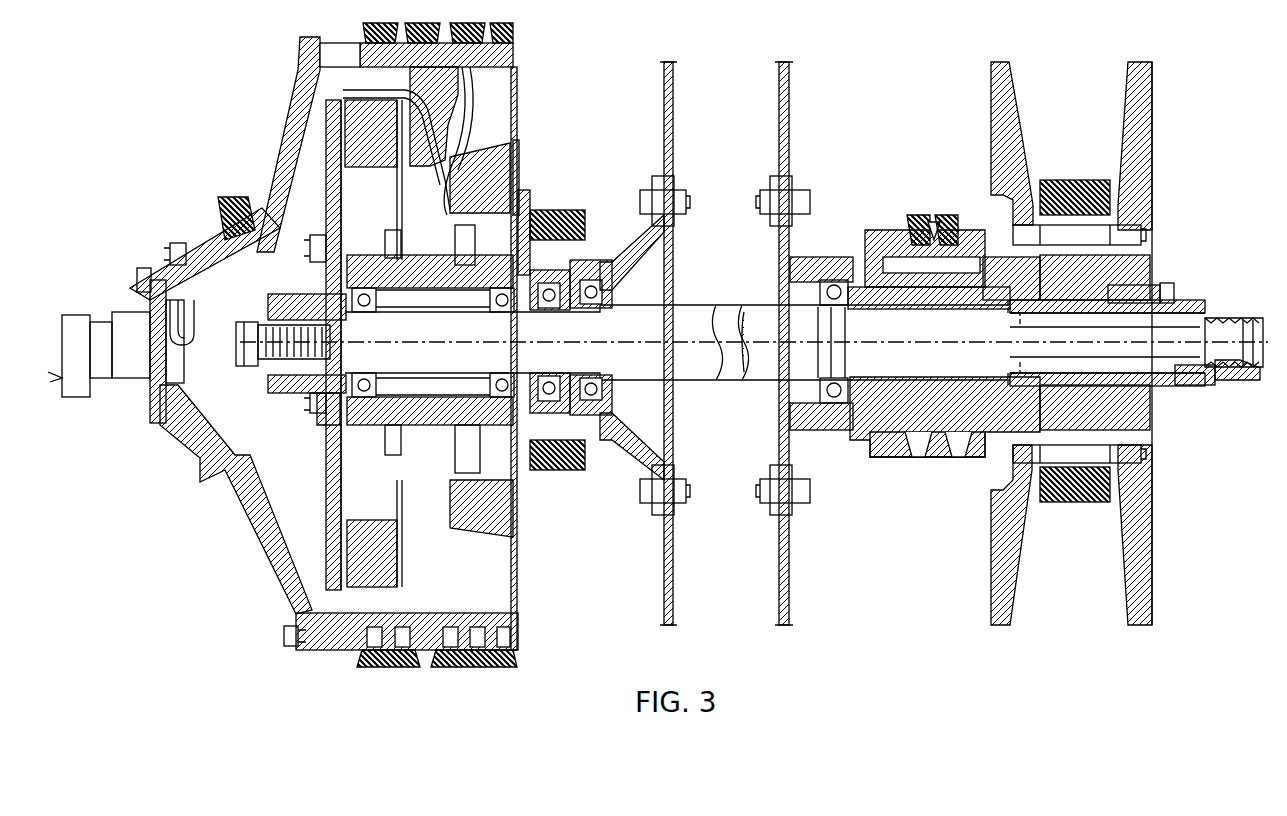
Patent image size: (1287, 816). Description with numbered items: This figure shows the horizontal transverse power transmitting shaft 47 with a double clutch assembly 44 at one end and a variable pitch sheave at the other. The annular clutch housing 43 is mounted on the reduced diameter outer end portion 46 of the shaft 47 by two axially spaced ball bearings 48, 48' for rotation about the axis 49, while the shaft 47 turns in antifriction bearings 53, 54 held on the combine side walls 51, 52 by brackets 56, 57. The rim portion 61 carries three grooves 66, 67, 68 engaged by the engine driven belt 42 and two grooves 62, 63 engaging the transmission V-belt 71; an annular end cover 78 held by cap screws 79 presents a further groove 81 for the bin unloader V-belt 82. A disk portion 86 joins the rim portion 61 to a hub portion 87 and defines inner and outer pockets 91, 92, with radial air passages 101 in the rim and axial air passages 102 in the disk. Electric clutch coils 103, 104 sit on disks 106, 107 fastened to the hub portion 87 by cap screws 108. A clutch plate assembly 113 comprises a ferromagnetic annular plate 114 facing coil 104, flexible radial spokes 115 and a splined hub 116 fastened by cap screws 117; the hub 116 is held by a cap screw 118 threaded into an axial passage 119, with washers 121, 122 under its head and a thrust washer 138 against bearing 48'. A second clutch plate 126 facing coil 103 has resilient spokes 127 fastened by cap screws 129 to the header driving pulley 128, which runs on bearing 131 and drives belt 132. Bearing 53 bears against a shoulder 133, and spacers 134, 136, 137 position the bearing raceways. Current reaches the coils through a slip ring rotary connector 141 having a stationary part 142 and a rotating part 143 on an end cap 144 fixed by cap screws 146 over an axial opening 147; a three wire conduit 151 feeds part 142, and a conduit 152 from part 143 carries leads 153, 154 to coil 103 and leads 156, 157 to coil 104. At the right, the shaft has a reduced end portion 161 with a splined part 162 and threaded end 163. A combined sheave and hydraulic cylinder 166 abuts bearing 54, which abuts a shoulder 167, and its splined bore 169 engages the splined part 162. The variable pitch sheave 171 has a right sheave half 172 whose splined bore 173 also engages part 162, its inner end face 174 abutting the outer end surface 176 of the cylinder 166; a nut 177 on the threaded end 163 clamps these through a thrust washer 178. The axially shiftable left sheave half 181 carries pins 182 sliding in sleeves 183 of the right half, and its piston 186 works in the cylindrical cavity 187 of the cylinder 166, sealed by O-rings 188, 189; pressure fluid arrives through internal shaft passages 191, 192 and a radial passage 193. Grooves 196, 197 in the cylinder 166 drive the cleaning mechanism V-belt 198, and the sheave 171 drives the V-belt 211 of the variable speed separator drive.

The engine driven belt 42 is at (480, 668).
The annular clutch housing 43 is at (272, 545).
The clutch assembly 44 is at (249, 116).
The reduced diameter laterally outer end portion 46 is at (430, 300).
The power transmitting shaft 47 is at (718, 305).
The ball bearing 48 is at (502, 342).
The ball bearing 48' is at (380, 342).
The axis 49 is at (744, 360).
The side wall 51 is at (664, 92).
The side wall 52 is at (790, 80).
The antifriction bearing 53 is at (604, 292).
The antifriction bearing 54 is at (834, 280).
The bracket 56 is at (610, 445).
The bracket 57 is at (830, 440).
The rim portion 61 is at (515, 52).
The V-belt groove 62 is at (372, 618).
The V-belt groove 63 is at (404, 604).
The V-belt groove 66 is at (450, 618).
The V-belt groove 67 is at (480, 618).
The V-belt groove 68 is at (512, 622).
The endless V-belt 71 is at (392, 668).
The annular end cover 78 is at (270, 518).
The cap screws 79 is at (284, 634).
The V-belt groove 81 is at (222, 478).
The endless V-belt 82 is at (232, 198).
The disk portion 86 is at (430, 108).
The hub portion 87 is at (380, 258).
The inner pocket 91 is at (480, 563).
The outer pocket 92 is at (300, 588).
The radial air passages 101 is at (362, 42).
The axial air passages 102 is at (440, 160).
The electric clutch coil 103 is at (500, 145).
The electric clutch coil 104 is at (371, 343).
The disk 106 is at (452, 224).
The disk 107 is at (396, 196).
The cap screws 108 is at (388, 232).
The clutch plate assembly 113 is at (296, 279).
The annular plate 114 is at (326, 164).
The flexible flat radial spokes 115 is at (326, 210).
The hub 116 is at (270, 300).
The cap screws 117 is at (310, 248).
The cap screw 118 is at (236, 346).
The threaded axial passage 119 is at (398, 353).
The washer 121 is at (268, 376).
The washer 122 is at (275, 392).
The second clutch plate 126 is at (520, 150).
The resilient spokes 127 is at (530, 200).
The header driving pulley 128 is at (585, 222).
The cap screws 129 is at (439, 370).
The antifriction bearing 131 is at (548, 308).
The belt 132 is at (566, 472).
The shoulder 133 is at (612, 312).
The spacer 134 is at (568, 366).
The spacer 136 is at (528, 376).
The spacer 137 is at (470, 380).
The thrust washer 138 is at (304, 409).
The rotary electrical connector 141 is at (70, 312).
The stationary part 142 is at (96, 385).
The rotating part 143 is at (136, 370).
The end cap 144 is at (170, 255).
The cap screws 146 is at (137, 276).
The annular axial opening 147 is at (182, 395).
The three wire conduit 151 is at (62, 400).
The multiple wire conduit 152 is at (185, 290).
The lead 153 is at (480, 178).
The lead 154 is at (452, 182).
The lead 156 is at (340, 55).
The lead 157 is at (396, 141).
The reduced diameter end portion 161 is at (929, 296).
The externally splined intermediate part 162 is at (1150, 290).
The externally threaded end 163 is at (1235, 318).
The combined V-belt sheave and hydraulic cylinder 166 is at (880, 230).
The shoulder 167 is at (818, 320).
The internally splined bore 169 is at (1122, 312).
The variable pitch V-belt sheave 171 is at (1164, 86).
The right sheave half 172 is at (1140, 74).
The splined bore 173 is at (1195, 385).
The laterally inner end face 174 is at (1070, 405).
The laterally outer end surface 176 is at (1098, 405).
The nut 177 is at (1238, 382).
The thrust washer 178 is at (1172, 283).
The left sheave half 181 is at (1010, 90).
The cylindrical pins 182 is at (1070, 195).
The sleeves 183 is at (1136, 222).
The piston 186 is at (908, 390).
The cylindrical cavity 187 is at (858, 440).
The O-ring 188 is at (908, 440).
The O-ring 189 is at (1078, 407).
The internal passage 191 is at (1142, 372).
The internal passage 192 is at (980, 322).
The radial passage 193 is at (1011, 275).
The V-belt groove 196 is at (920, 215).
The V-belt groove 197 is at (950, 220).
The endless V-belt 198 is at (936, 225).
The V-belt 211 is at (1092, 180).